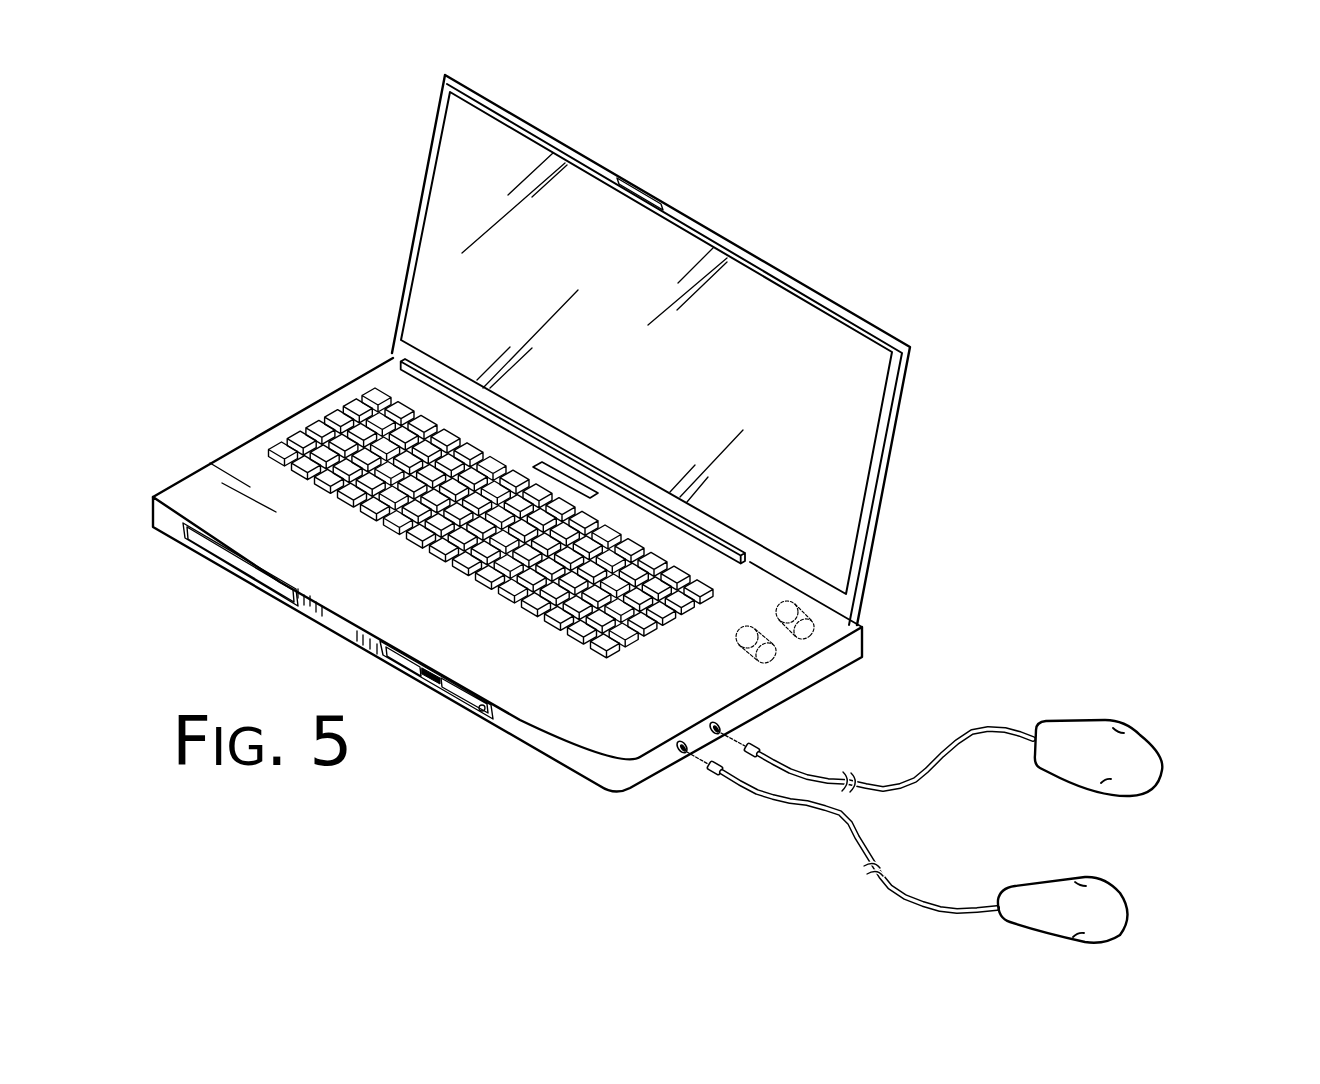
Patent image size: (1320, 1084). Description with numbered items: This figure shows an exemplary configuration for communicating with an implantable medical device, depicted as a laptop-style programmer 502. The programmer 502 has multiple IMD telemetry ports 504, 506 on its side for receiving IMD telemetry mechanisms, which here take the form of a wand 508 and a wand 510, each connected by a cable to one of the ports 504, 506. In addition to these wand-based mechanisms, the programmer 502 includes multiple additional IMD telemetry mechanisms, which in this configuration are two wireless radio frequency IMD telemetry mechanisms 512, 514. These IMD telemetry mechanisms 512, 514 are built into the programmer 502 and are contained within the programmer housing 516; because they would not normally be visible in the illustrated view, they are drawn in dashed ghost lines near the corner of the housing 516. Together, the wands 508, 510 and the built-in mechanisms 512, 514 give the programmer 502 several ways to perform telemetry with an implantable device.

The programmer 502 is at (594, 440).
The IMD telemetry port 504 is at (722, 727).
The IMD telemetry port 506 is at (681, 756).
The wand 508 is at (1113, 722).
The wand 510 is at (1097, 878).
The wireless radio frequency IMD telemetry mechanism 512 is at (772, 614).
The wireless radio frequency IMD telemetry mechanism 514 is at (740, 651).
The programmer housing 516 is at (867, 666).